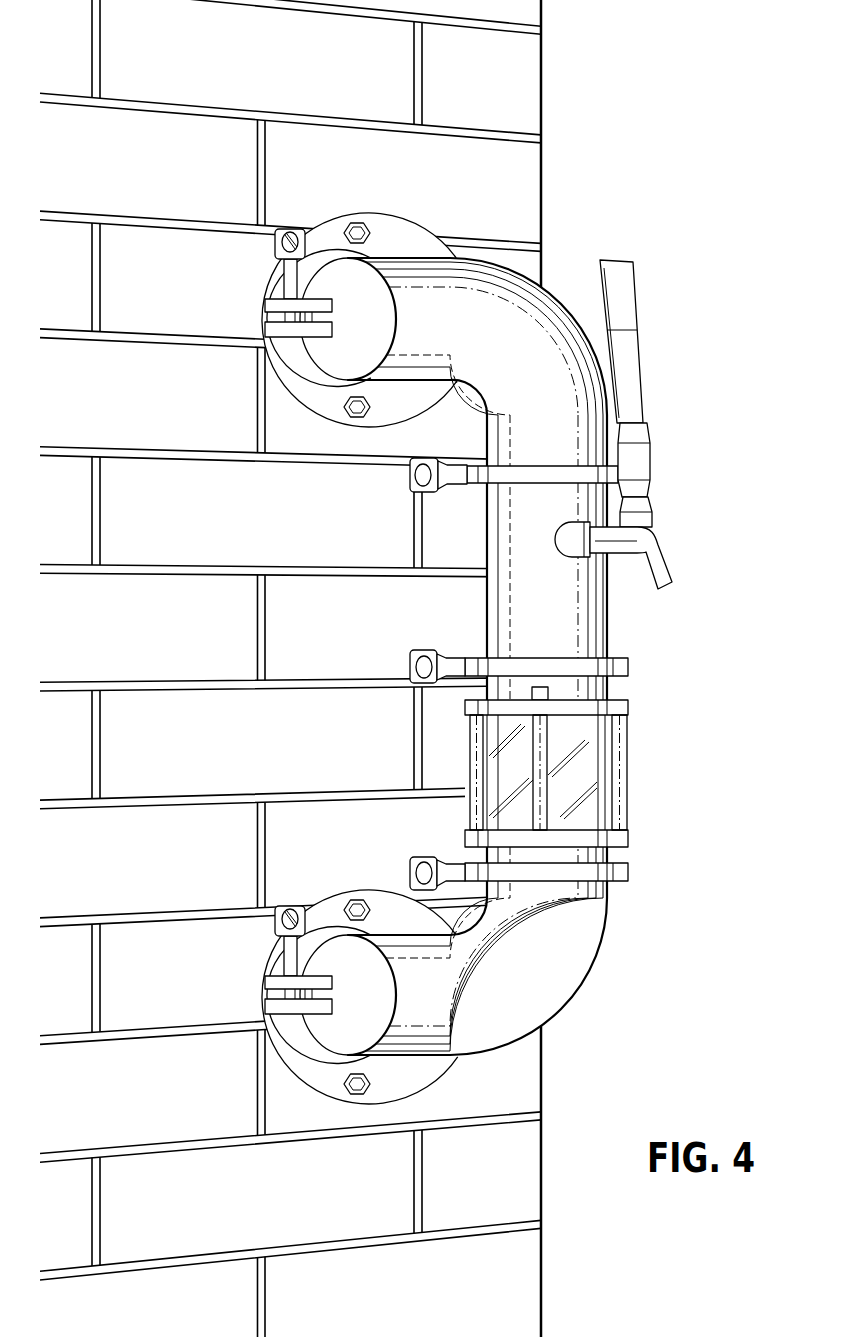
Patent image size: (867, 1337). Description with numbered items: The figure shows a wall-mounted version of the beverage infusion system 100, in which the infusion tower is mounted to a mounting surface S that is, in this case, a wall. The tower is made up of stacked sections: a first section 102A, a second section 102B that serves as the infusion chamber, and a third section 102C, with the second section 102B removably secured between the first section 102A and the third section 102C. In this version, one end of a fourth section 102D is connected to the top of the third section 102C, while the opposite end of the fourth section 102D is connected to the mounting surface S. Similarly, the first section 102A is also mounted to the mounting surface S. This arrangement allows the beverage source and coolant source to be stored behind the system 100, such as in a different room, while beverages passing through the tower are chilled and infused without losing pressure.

The beverage infusion system 100 is at (535, 568).
The first section 102A is at (592, 983).
The second section 102B is at (643, 767).
The third section 102C is at (474, 588).
The fourth section 102D is at (574, 279).
The mounting surface S is at (313, 747).